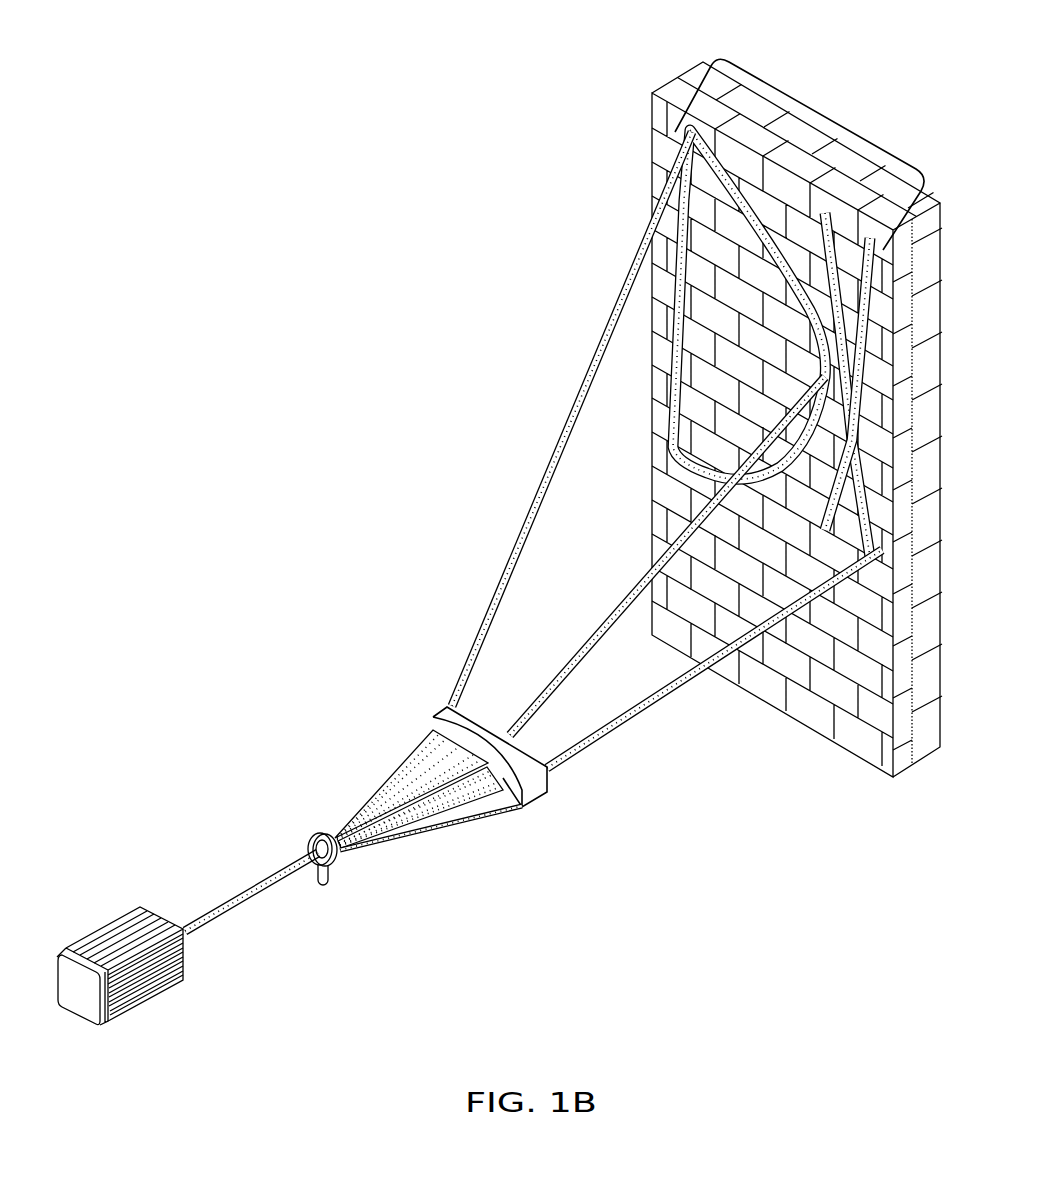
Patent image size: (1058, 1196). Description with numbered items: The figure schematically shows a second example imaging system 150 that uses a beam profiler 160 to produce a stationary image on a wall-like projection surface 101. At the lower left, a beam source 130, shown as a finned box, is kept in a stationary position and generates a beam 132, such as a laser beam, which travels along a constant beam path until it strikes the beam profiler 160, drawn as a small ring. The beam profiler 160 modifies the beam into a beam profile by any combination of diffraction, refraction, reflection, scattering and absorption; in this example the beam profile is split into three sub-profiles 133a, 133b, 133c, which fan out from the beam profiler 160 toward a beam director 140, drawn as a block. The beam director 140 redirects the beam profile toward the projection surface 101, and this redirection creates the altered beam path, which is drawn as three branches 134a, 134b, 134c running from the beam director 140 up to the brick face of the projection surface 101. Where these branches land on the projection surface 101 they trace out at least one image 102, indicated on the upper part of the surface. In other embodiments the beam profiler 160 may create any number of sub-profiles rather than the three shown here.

The imaging system 150 is at (218, 74).
The projection surface 101 is at (653, 110).
The image 102 is at (835, 117).
The beam source 130 is at (123, 915).
The beam 132 is at (233, 900).
The sub-profile 133a is at (402, 780).
The sub-profile 133b is at (382, 833).
The sub-profile 133c is at (457, 778).
The altered beam path 134a is at (532, 520).
The altered beam path 134b is at (607, 622).
The altered beam path 134c is at (635, 715).
The beam director 140 is at (537, 762).
The beam profiler 160 is at (312, 841).